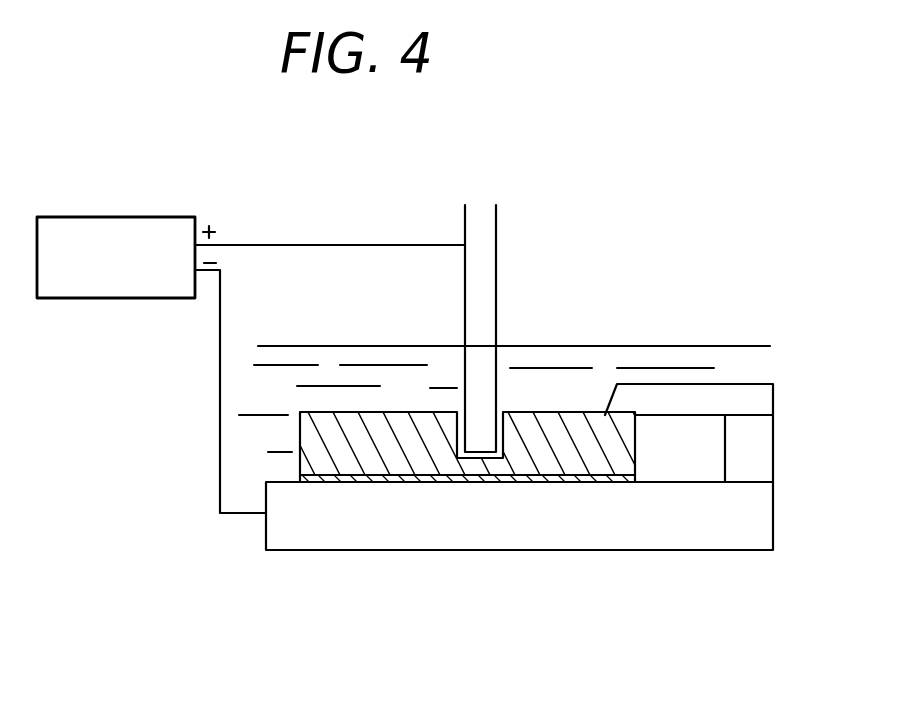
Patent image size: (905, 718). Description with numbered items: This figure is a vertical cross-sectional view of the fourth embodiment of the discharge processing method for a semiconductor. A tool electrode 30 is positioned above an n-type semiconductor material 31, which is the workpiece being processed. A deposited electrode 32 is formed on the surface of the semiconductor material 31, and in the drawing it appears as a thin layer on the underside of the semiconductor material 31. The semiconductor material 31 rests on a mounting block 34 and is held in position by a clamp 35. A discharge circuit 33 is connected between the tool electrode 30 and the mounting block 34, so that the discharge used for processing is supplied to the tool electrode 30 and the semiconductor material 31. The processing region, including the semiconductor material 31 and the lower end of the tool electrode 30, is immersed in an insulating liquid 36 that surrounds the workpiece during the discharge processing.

The tool electrode 30 is at (497, 222).
The n-type semiconductor material 31 is at (593, 415).
The deposited electrode 32 is at (605, 482).
The discharge circuit 33 is at (143, 213).
The mounting block 34 is at (340, 550).
The clamp 35 is at (773, 400).
The insulating liquid 36 is at (556, 358).